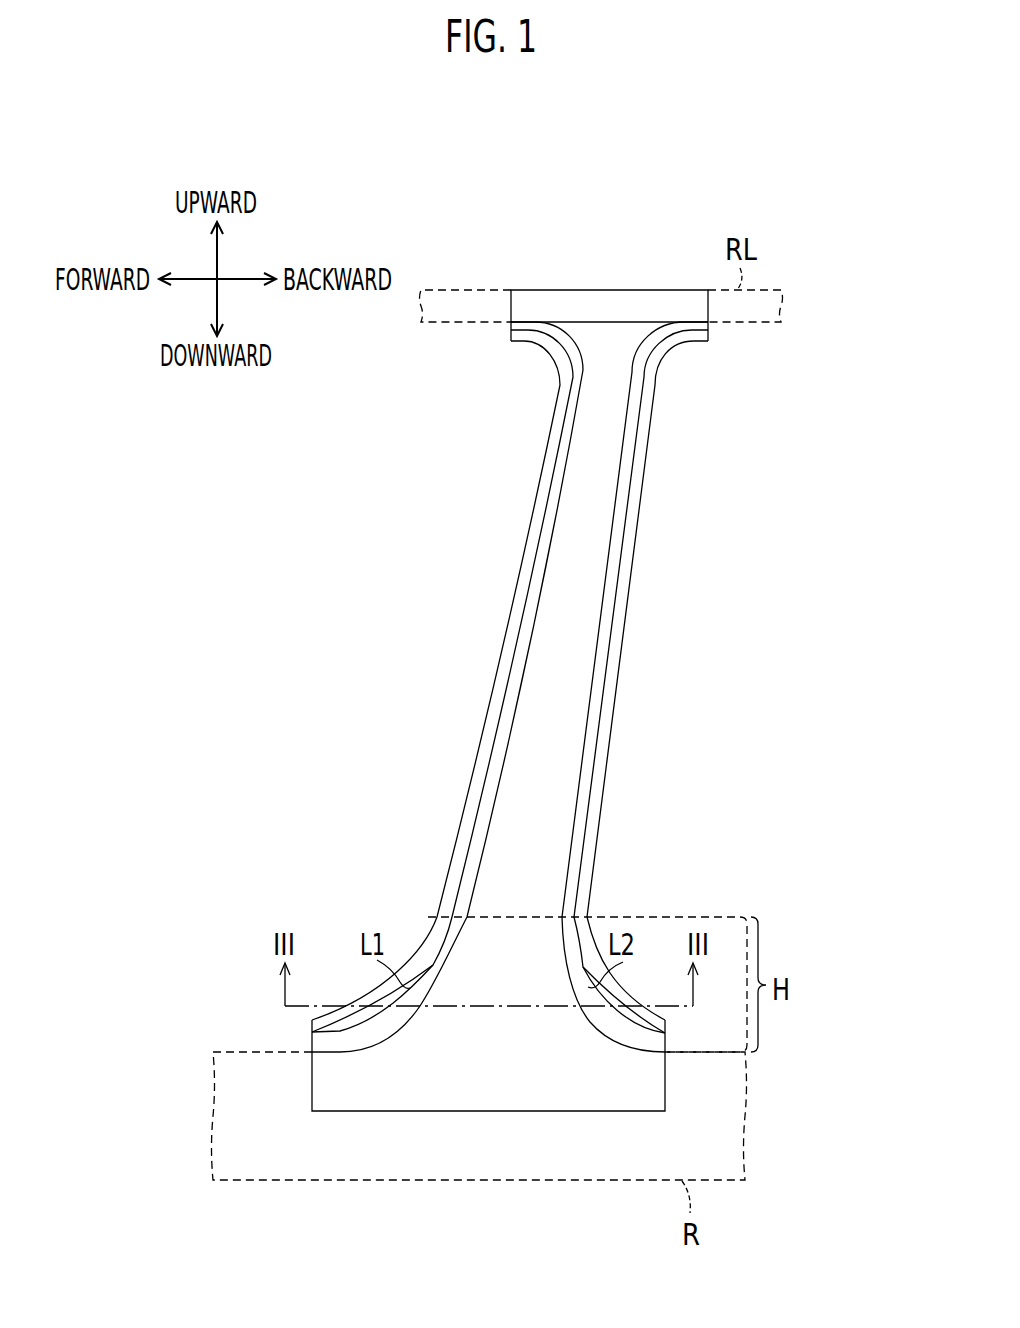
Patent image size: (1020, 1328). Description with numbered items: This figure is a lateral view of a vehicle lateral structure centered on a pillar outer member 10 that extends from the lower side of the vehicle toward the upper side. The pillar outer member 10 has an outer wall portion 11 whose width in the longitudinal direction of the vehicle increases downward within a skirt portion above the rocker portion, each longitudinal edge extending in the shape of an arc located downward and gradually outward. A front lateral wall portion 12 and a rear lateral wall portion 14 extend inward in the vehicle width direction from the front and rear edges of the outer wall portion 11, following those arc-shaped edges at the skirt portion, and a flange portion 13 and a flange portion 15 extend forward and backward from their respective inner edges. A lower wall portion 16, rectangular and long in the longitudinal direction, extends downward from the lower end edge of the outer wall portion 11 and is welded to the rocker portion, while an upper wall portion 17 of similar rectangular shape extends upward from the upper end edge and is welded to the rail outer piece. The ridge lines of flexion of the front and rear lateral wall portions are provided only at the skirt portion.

The pillar outer member 10 is at (465, 430).
The outer wall portion 11 is at (570, 658).
The front lateral wall portion 12 is at (543, 567).
The flange portion 13 is at (510, 631).
The rear lateral wall portion 14 is at (610, 572).
The flange portion 15 is at (608, 730).
The lower wall portion 16 is at (480, 1083).
The upper wall portion 17 is at (609, 296).